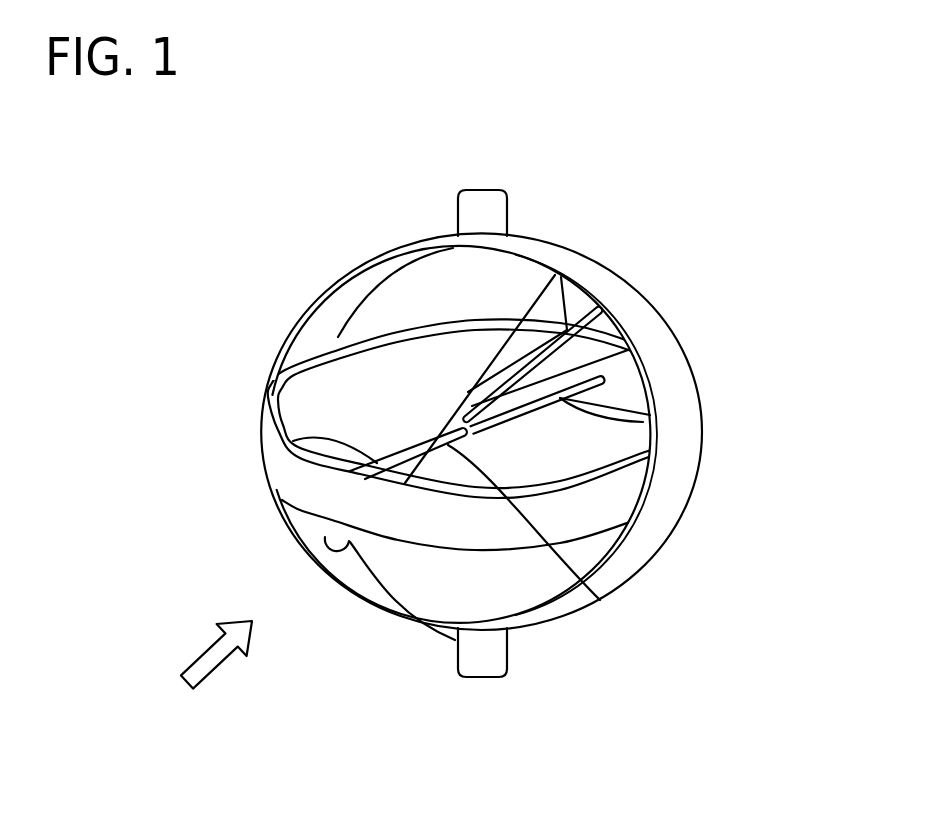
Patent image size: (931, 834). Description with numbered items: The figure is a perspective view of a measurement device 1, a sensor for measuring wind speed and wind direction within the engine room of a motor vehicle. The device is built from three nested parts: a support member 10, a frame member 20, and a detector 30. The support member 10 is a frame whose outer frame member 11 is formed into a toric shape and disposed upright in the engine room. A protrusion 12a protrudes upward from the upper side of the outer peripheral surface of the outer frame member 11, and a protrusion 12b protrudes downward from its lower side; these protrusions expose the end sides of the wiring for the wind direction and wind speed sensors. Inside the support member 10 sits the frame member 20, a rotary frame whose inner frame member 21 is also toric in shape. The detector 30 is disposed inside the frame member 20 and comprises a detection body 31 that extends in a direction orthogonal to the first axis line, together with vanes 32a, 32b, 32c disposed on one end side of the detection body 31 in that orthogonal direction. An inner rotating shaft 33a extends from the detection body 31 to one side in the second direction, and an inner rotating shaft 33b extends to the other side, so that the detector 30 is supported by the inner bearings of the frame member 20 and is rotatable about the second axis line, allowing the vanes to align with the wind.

The measurement device 1 is at (170, 735).
The support member 10 is at (678, 526).
The outer frame member 11 is at (683, 434).
The protrusion 12a is at (487, 205).
The protrusion 12b is at (477, 667).
The frame member 20 is at (300, 483).
The inner frame member 21 is at (423, 530).
The detector 30 is at (590, 355).
The detection body 31 is at (600, 600).
The vane 32a is at (537, 390).
The vane 32b is at (590, 313).
The vane 32c is at (548, 312).
The inner rotating shaft 33a is at (290, 445).
The inner rotating shaft 33b is at (650, 420).